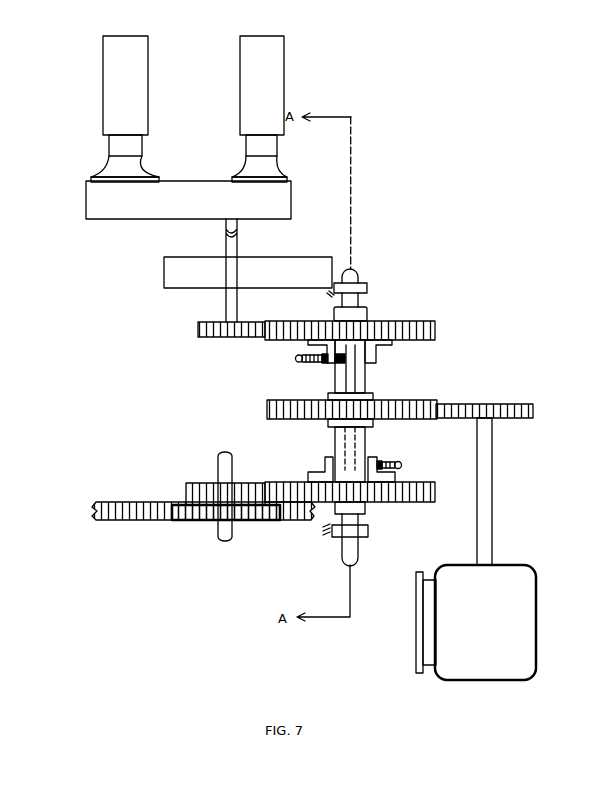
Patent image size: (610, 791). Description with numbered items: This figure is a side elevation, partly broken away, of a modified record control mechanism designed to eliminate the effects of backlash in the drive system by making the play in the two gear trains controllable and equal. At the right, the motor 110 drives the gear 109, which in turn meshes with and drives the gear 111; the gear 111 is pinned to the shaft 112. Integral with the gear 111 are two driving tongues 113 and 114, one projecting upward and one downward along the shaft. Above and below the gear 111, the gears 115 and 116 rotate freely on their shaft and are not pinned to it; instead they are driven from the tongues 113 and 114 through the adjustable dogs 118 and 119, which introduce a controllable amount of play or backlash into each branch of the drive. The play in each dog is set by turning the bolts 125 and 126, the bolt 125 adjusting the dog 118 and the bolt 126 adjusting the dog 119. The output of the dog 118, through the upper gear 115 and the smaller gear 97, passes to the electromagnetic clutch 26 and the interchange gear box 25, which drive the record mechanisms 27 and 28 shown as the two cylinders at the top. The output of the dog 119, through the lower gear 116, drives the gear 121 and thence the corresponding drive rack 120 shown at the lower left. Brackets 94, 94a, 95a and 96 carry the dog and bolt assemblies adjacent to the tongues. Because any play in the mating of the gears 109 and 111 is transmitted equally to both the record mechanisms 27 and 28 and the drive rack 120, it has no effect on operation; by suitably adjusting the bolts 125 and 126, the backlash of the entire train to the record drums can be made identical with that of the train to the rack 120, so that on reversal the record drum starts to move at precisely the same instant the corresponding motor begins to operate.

The record mechanism 27 is at (115, 97).
The record mechanism 28 is at (278, 79).
The electromagnetic clutch 26 is at (198, 207).
The interchange gear box 25 is at (250, 278).
The gear 97 is at (200, 330).
The gear 115 is at (435, 331).
The driving tongue 113 is at (352, 382).
The driving tongue 114 is at (367, 441).
The bracket 94 is at (310, 342).
The bracket 94a is at (383, 345).
The bolt 125 is at (297, 359).
The adjustable dog 118 is at (329, 364).
The gear 111 is at (267, 408).
The gear 109 is at (533, 406).
The bracket 95a is at (320, 473).
The bracket 96 is at (388, 478).
The adjustable dog 119 is at (378, 461).
The bolt 126 is at (402, 466).
The gear 116 is at (417, 502).
The shaft 112 is at (353, 548).
The gear 121 is at (253, 522).
The drive rack 120 is at (103, 522).
The motor 110 is at (522, 633).